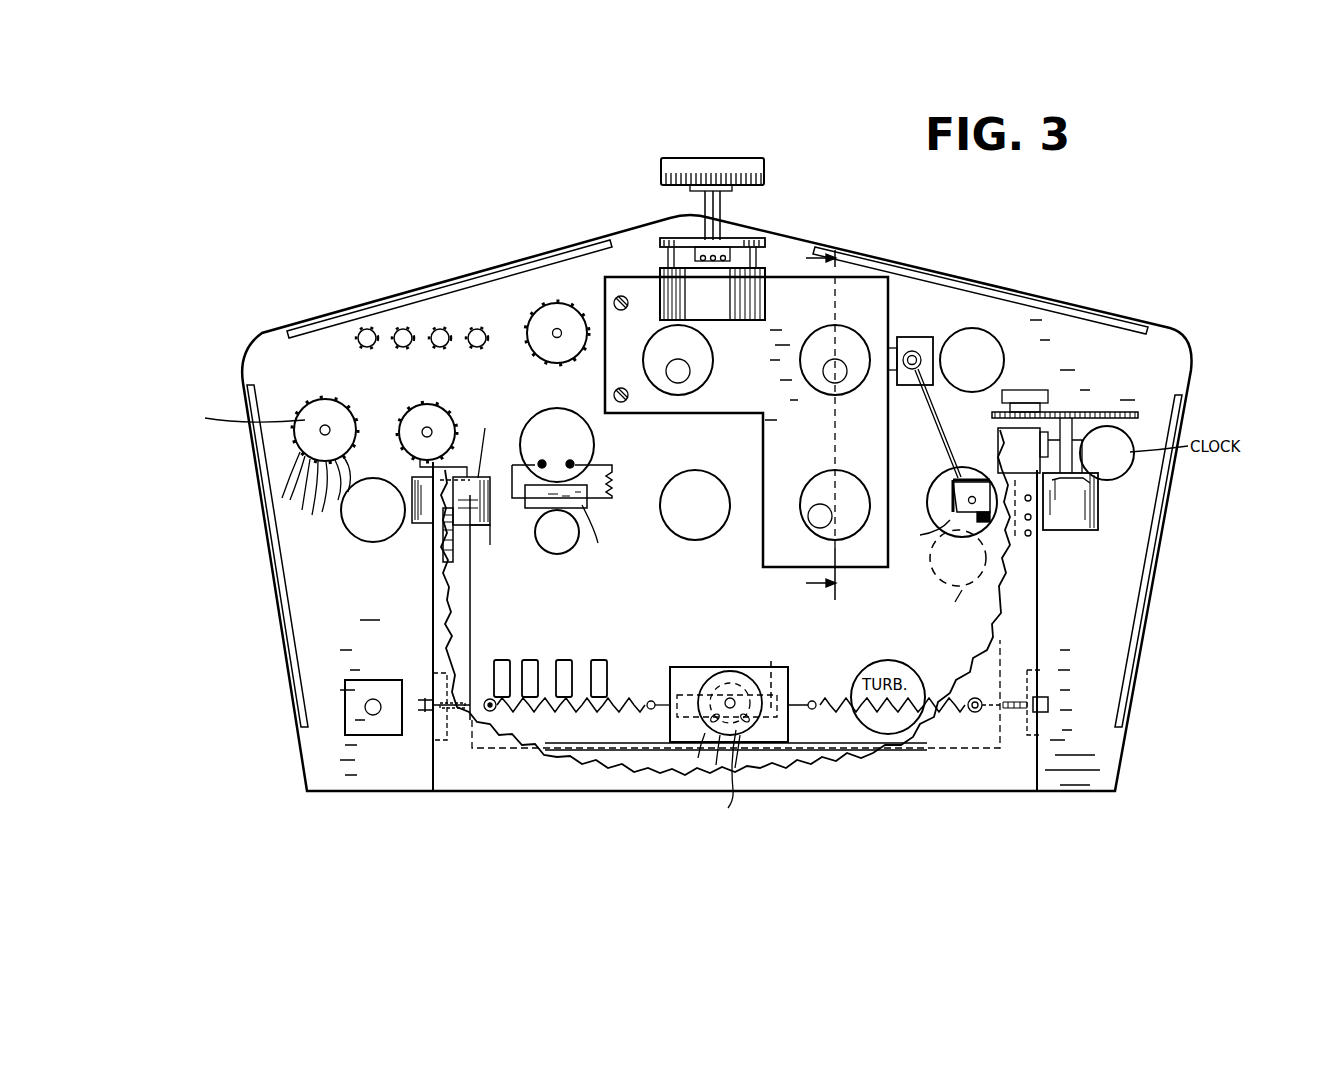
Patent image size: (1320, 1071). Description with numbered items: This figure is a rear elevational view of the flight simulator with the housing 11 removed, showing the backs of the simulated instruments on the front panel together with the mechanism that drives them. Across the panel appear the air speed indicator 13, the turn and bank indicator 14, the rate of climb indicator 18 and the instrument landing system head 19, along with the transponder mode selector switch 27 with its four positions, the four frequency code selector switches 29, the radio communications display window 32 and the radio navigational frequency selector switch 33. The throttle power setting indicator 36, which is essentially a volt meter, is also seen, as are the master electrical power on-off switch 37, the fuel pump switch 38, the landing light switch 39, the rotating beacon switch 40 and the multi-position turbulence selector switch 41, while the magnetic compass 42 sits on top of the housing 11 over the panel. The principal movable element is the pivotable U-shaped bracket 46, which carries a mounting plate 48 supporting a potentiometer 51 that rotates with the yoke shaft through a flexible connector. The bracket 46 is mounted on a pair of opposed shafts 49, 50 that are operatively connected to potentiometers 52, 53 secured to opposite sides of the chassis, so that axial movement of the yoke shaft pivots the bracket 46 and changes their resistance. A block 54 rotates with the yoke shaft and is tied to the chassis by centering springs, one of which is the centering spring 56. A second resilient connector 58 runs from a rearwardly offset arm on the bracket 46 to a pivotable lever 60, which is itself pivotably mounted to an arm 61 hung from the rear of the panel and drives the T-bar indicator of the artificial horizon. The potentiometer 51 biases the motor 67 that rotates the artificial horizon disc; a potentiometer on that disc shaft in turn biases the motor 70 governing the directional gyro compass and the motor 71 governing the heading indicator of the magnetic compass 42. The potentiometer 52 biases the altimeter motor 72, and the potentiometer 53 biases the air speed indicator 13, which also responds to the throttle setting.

The housing 11 is at (930, 258).
The air speed indicator 13 is at (985, 345).
The turn and bank indicator 14 is at (980, 462).
The rate of climb indicator 18 is at (706, 545).
The instrument landing system head 19 is at (585, 448).
The mode selector switch 27 is at (567, 318).
The frequency code selector switches 29 is at (495, 305).
The display window 32 is at (440, 415).
The radio navigational frequency selector switch 33 is at (300, 460).
The throttle power setting indicator 36 is at (372, 530).
The master electrical power on-off switch 37 is at (615, 645).
The fuel pump switch 38 is at (565, 665).
The landing light switch 39 is at (530, 664).
The rotating beacon switch 40 is at (502, 665).
The turbulence selector switch 41 is at (895, 740).
The magnetic compass 42 is at (765, 172).
The U-shaped bracket 46 is at (640, 752).
The mounting plate 48 is at (703, 667).
The shaft 49 is at (952, 587).
The shaft 50 is at (492, 540).
The potentiometer 51 is at (744, 779).
The potentiometer 52 is at (1042, 562).
The potentiometer 53 is at (443, 545).
The block 54 is at (771, 662).
The centering spring 56 is at (612, 705).
The resilient connector 58 is at (948, 435).
The pivotable lever 60 is at (912, 338).
The arm 61 is at (878, 318).
The motor 67 is at (842, 330).
The motor 70 is at (855, 480).
The motor 71 is at (664, 288).
The motor 72 is at (655, 340).